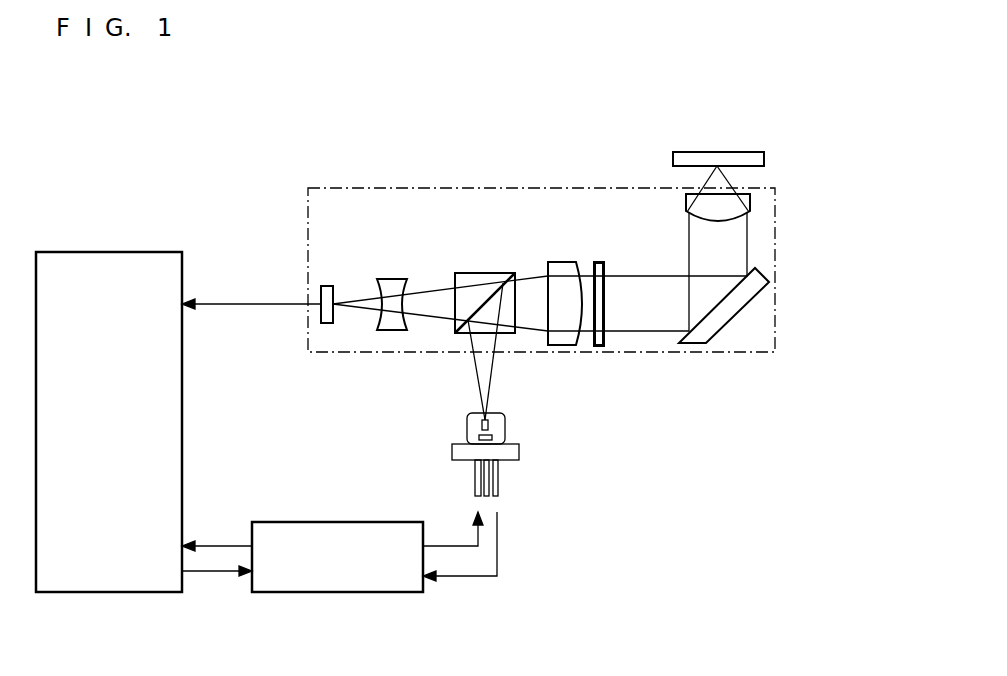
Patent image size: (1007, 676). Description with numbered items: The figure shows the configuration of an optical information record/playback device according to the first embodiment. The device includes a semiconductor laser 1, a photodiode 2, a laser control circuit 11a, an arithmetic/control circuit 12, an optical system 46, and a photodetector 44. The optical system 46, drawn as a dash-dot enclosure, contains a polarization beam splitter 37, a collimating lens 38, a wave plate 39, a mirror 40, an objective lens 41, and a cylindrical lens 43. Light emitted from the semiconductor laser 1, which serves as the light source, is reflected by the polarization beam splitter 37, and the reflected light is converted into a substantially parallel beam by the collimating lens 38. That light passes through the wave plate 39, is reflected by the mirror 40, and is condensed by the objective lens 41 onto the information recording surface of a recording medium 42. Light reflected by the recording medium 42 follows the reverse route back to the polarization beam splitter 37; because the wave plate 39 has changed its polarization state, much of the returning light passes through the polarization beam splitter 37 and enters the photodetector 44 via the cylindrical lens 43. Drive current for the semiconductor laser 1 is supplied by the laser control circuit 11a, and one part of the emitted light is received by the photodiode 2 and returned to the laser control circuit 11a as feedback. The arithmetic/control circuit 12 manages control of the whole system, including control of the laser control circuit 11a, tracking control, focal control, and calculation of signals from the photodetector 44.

The semiconductor laser 1 is at (488, 426).
The photodiode 2 is at (492, 438).
The laser control circuit 11a is at (305, 520).
The arithmetic/control circuit 12 is at (112, 252).
The polarization beam splitter 37 is at (482, 273).
The collimating lens 38 is at (563, 263).
The wave plate 39 is at (605, 340).
The mirror 40 is at (738, 313).
The objective lens 41 is at (750, 207).
The recording medium 42 is at (764, 158).
The cylindrical lens 43 is at (390, 277).
The photodetector 44 is at (325, 283).
The optical system 46 is at (424, 187).